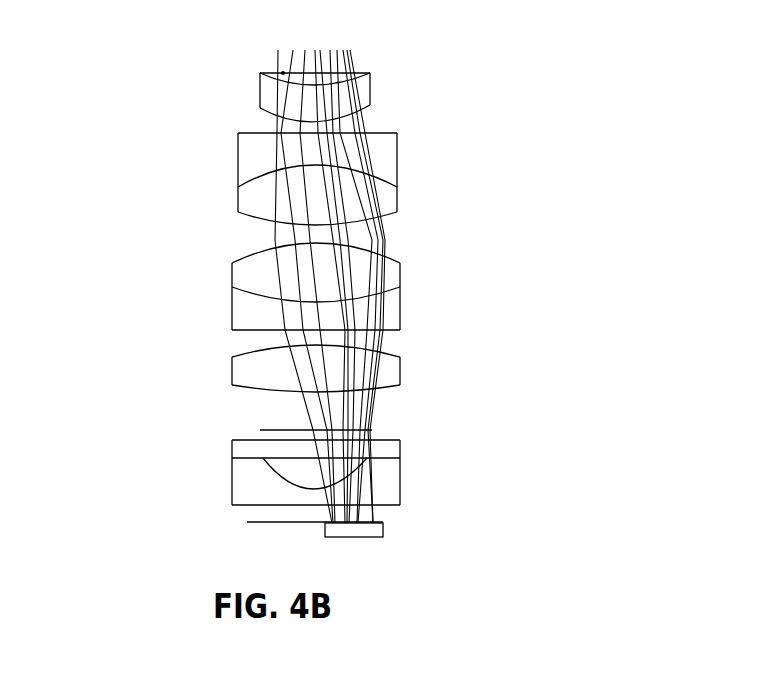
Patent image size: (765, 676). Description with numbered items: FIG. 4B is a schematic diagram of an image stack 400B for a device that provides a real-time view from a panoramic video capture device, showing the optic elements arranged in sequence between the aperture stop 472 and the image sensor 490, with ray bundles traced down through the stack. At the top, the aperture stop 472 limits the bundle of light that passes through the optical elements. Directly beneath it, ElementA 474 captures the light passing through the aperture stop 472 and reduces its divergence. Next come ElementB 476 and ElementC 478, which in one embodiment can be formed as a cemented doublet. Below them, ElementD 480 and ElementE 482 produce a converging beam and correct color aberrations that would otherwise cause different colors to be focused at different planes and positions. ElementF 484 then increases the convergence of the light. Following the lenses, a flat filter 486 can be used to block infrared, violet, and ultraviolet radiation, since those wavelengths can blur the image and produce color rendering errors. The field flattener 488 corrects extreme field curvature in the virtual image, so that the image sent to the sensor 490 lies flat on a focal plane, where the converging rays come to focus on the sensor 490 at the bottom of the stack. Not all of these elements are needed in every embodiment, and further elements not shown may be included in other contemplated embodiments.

The optical system 400B is at (662, 33).
The aperture stop 472 is at (283, 73).
The ElementA 474 is at (270, 97).
The ElementB 476 is at (252, 159).
The ElementC 478 is at (262, 192).
The ElementD 480 is at (247, 273).
The ElementE 482 is at (243, 317).
The ElementF 484 is at (248, 370).
The flat filter 486 is at (250, 449).
The field flattener 488 is at (250, 493).
The image sensor 490 is at (348, 528).